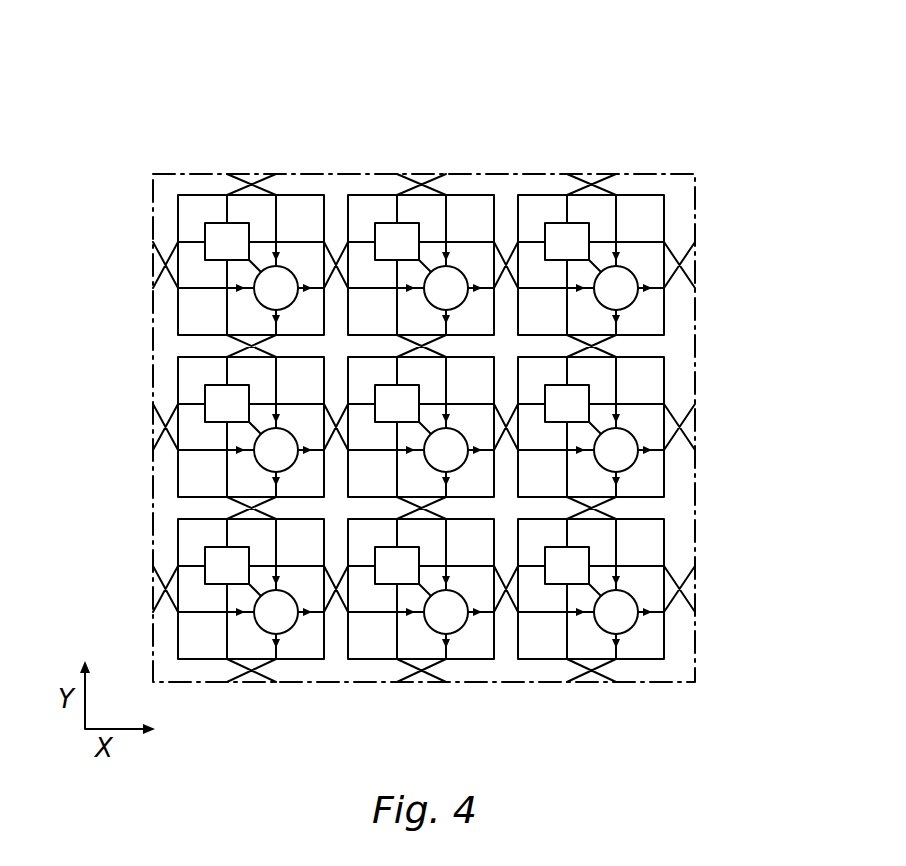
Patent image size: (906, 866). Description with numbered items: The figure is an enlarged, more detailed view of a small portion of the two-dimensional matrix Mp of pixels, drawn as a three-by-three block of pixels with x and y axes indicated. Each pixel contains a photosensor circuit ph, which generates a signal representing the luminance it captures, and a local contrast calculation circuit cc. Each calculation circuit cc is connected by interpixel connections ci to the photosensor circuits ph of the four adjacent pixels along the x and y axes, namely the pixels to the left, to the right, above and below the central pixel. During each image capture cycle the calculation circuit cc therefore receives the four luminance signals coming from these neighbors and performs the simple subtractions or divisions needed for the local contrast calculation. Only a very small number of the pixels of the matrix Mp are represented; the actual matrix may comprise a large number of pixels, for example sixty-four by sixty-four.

The matrix of pixels Mp is at (664, 114).
The photosensor circuit ph is at (395, 223).
The local contrast calculation circuit cc is at (640, 304).
The interpixel connections ci is at (240, 178).